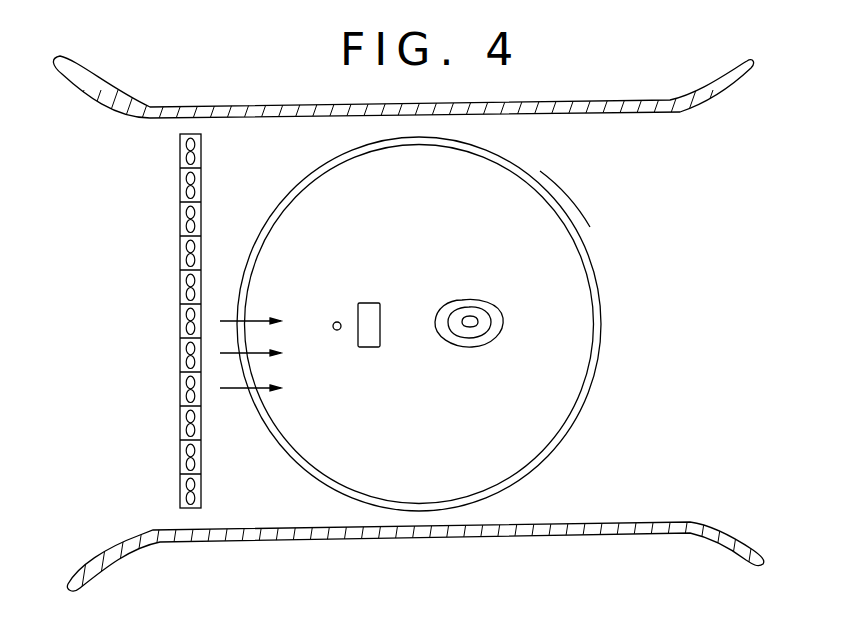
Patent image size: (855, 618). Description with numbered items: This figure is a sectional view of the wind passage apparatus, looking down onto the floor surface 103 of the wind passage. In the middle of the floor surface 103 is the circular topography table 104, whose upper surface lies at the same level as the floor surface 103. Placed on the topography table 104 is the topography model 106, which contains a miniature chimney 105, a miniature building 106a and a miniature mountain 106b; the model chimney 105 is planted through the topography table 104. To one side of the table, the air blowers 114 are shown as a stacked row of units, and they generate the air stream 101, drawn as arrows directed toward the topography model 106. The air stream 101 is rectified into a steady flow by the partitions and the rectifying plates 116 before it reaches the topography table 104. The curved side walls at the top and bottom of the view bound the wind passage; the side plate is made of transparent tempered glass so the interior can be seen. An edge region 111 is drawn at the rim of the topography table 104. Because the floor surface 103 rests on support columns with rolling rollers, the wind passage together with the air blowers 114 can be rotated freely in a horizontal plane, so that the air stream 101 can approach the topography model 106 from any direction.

The air stream 101 is at (300, 380).
The floor surface 103 is at (605, 380).
The topography table 104 is at (508, 432).
The miniature chimney 105 is at (335, 322).
The topography model 106 is at (426, 284).
The miniature building 106a is at (372, 303).
The miniature mountain 106b is at (481, 305).
The wafer edge ring 111 is at (582, 243).
The air blowers 114 is at (181, 287).
The rectifying plates 116 is at (181, 255).